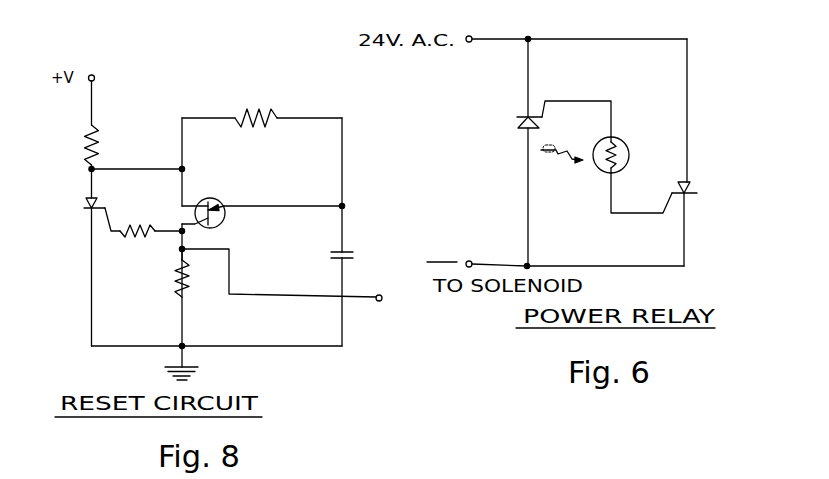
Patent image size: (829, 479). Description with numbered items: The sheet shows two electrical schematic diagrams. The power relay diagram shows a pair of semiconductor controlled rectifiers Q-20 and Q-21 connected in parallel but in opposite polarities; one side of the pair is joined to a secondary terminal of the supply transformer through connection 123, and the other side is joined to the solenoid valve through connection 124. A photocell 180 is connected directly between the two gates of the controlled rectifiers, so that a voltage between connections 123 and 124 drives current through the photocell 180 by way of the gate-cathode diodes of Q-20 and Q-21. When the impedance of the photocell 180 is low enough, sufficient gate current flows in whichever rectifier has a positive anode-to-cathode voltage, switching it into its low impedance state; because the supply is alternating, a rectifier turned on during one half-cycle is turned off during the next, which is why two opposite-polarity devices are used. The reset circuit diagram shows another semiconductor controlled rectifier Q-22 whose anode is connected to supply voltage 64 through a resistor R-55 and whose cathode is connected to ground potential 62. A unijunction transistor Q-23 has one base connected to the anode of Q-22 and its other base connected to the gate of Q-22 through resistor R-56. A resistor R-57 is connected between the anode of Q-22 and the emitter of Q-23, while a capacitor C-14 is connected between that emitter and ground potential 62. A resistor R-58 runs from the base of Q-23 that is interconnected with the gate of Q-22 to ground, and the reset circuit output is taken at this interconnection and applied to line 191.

In FIG. 8, the supply voltage 64 is at (94, 78).
In FIG. 8, the resistor R-55 is at (112, 161).
In FIG. 8, the semiconductor controlled rectifier Q-22 is at (77, 271).
In FIG. 8, the resistor R-56 is at (151, 222).
In FIG. 8, the unijunction transistor Q-23 is at (262, 202).
In FIG. 8, the resistor R-57 is at (262, 108).
In FIG. 8, the capacitor C-14 is at (320, 295).
In FIG. 8, the resistor R-58 is at (160, 273).
In FIG. 8, the line 191 is at (379, 295).
In FIG. 8, the ground potential 62 is at (193, 372).
In FIG. 6, the connection 123 is at (526, 37).
In FIG. 6, the semiconductor controlled rectifier Q-20 is at (547, 152).
In FIG. 6, the photocell 180 is at (626, 146).
In FIG. 6, the semiconductor controlled rectifier Q-21 is at (704, 220).
In FIG. 6, the connection 124 is at (525, 265).